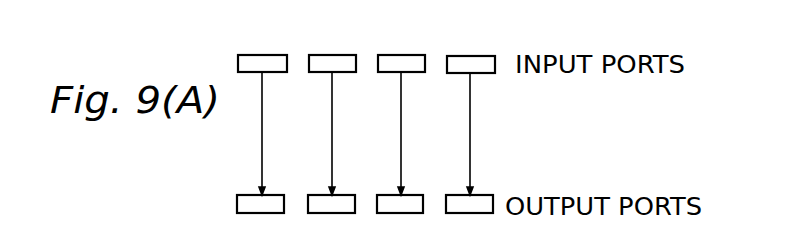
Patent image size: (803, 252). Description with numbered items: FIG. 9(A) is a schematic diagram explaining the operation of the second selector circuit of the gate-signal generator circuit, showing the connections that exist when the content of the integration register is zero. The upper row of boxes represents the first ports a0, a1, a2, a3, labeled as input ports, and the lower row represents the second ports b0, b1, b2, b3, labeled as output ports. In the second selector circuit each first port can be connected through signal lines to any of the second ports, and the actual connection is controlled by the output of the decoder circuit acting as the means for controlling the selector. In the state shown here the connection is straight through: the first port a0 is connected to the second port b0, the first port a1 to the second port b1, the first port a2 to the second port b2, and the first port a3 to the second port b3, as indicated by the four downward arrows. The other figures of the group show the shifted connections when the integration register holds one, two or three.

The first port a0 is at (258, 55).
The first port a1 is at (331, 55).
The first port a2 is at (400, 55).
The first port a3 is at (470, 56).
The second port b0 is at (260, 213).
The second port b1 is at (330, 213).
The second port b2 is at (399, 213).
The second port b3 is at (469, 213).